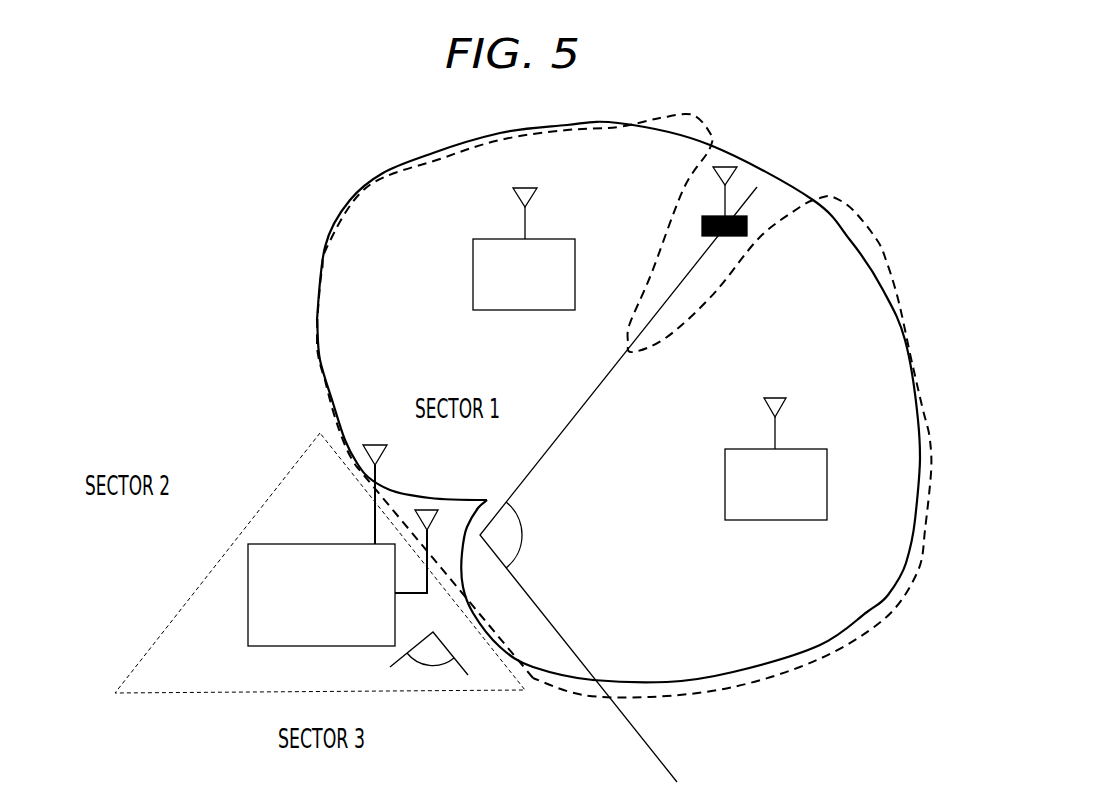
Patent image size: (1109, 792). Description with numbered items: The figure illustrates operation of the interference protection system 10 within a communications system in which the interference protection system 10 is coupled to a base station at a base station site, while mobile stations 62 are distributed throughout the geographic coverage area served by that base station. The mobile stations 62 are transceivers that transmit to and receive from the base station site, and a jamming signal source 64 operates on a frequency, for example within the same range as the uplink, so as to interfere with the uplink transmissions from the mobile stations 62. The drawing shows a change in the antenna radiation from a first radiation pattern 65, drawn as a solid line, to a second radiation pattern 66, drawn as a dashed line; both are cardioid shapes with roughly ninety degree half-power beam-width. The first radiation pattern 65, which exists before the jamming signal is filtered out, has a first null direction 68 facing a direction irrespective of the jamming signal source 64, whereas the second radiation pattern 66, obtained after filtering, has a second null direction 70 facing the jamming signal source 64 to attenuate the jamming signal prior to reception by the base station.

The interference protection system 10 is at (318, 646).
The mobile station 62 is at (473, 275).
The jamming signal source 64 is at (747, 226).
The first radiation pattern 65 is at (817, 644).
The second radiation pattern 66 is at (885, 253).
The first null direction 68 is at (428, 665).
The second null direction 70 is at (523, 535).